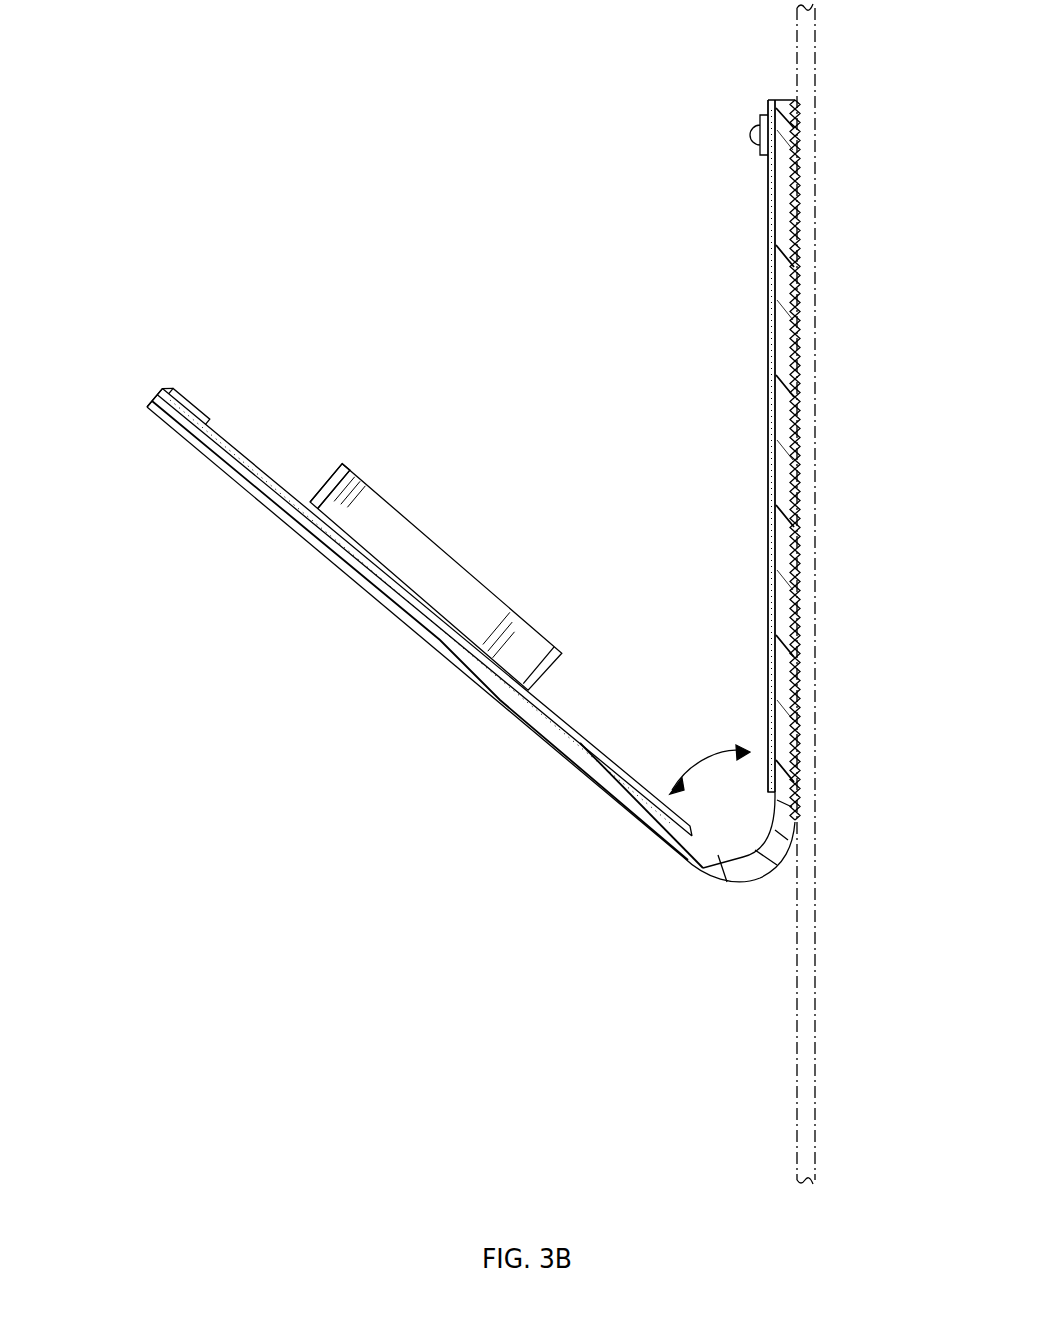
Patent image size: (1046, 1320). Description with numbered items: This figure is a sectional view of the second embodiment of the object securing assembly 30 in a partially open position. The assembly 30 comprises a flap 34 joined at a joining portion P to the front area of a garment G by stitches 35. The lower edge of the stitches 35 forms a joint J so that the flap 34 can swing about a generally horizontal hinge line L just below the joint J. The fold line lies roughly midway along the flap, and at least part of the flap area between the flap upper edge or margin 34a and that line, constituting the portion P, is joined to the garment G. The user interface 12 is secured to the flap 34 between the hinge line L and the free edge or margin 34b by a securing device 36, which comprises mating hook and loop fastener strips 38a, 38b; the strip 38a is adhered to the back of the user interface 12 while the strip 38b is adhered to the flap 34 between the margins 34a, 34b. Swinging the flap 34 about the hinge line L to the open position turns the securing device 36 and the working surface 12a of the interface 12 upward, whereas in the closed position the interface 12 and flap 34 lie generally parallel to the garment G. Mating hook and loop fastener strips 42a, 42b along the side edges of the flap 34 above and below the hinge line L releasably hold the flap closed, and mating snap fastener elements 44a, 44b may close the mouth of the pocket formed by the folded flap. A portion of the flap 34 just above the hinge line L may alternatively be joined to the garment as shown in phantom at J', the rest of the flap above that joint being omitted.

The object securing assembly 30 is at (295, 757).
The flap 34 is at (556, 737).
The flap upper edge or margin 34a is at (780, 100).
The free edge or margin 34b is at (152, 400).
The stitches 35 is at (800, 133).
The securing device 36 is at (300, 535).
The hook and loop fastener strip 38a is at (353, 553).
The hook and loop fastener strip 38b is at (425, 642).
The hook and loop fastener strip 42a is at (768, 325).
The hook and loop fastener strip 42b is at (600, 735).
The snap fastener element 44a is at (750, 135).
The snap fastener element 44b is at (180, 395).
The user interface 12 is at (530, 578).
The working surface 12a is at (420, 525).
The garment G is at (790, 45).
The joining portion P is at (806, 497).
The joint J is at (835, 802).
The displaced joint position J' is at (838, 815).
The hinge line L is at (793, 830).